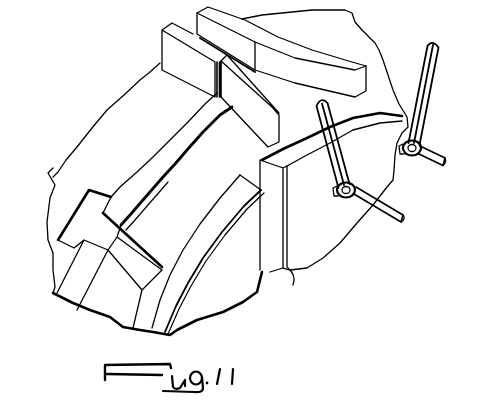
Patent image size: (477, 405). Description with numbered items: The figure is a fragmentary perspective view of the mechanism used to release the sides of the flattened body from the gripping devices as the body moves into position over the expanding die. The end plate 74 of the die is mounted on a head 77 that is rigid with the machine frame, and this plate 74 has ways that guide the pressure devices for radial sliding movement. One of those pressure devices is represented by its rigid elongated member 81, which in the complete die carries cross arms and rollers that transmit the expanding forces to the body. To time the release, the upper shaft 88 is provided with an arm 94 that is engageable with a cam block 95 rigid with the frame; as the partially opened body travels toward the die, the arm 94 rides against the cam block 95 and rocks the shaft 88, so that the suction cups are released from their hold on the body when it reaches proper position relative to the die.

The head 77 is at (130, 100).
The end plate 74 is at (147, 175).
The cam block 95 is at (293, 70).
The rigid elongated member 81 is at (252, 273).
The arm 94 is at (337, 155).
The upper shaft 88 is at (377, 220).